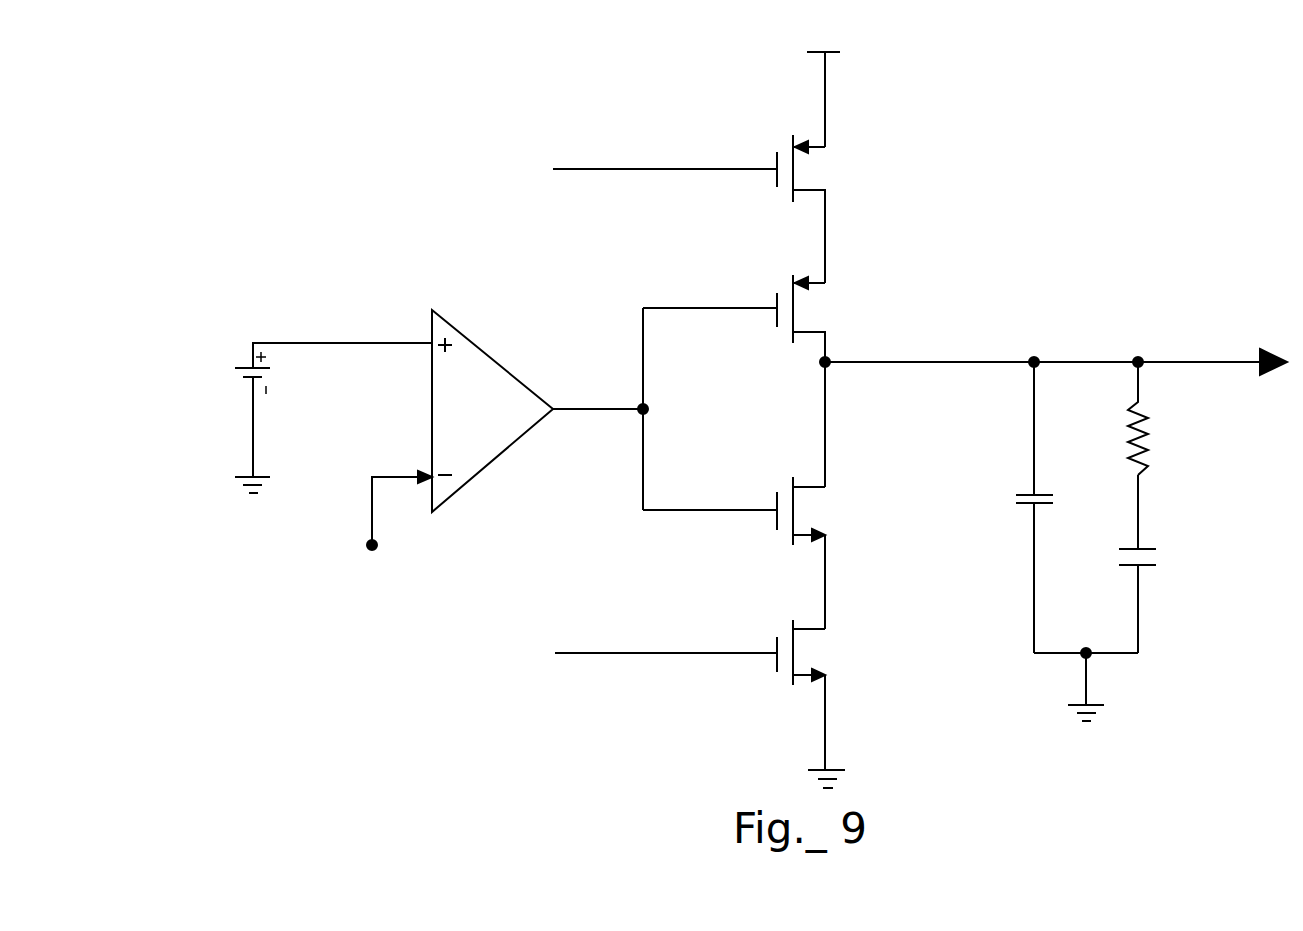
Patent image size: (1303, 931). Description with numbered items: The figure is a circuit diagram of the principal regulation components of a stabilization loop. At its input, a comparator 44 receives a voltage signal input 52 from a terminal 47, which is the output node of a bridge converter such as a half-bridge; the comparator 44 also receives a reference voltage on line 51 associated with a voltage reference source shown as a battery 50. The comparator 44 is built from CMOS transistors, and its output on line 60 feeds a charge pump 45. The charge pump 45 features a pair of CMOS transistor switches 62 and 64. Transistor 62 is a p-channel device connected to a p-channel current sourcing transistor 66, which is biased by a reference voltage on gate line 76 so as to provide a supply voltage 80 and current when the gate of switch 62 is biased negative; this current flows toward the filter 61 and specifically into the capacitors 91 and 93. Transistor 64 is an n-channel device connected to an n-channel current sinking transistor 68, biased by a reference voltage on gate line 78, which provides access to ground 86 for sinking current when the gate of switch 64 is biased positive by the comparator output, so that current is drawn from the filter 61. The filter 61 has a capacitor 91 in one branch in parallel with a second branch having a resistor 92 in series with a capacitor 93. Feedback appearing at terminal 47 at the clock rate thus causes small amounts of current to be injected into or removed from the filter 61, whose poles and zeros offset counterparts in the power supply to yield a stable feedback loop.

The comparator 44 is at (505, 368).
The charge pump 45 is at (921, 222).
The terminal 47 is at (378, 545).
The battery 50 is at (262, 375).
The line 51 is at (304, 343).
The voltage signal input 52 is at (405, 473).
The line 60 is at (595, 406).
The filter 61 is at (1070, 348).
The transistor 62 is at (795, 312).
The transistor 64 is at (795, 515).
The current sourcing transistor 66 is at (795, 172).
The current sinking transistor 68 is at (795, 655).
The gate line 76 is at (615, 169).
The gate line 78 is at (590, 652).
The supply voltage 80 is at (840, 52).
The ground 86 is at (835, 768).
The capacitor 91 is at (1045, 492).
The resistor 92 is at (1145, 420).
The capacitor 93 is at (1146, 548).